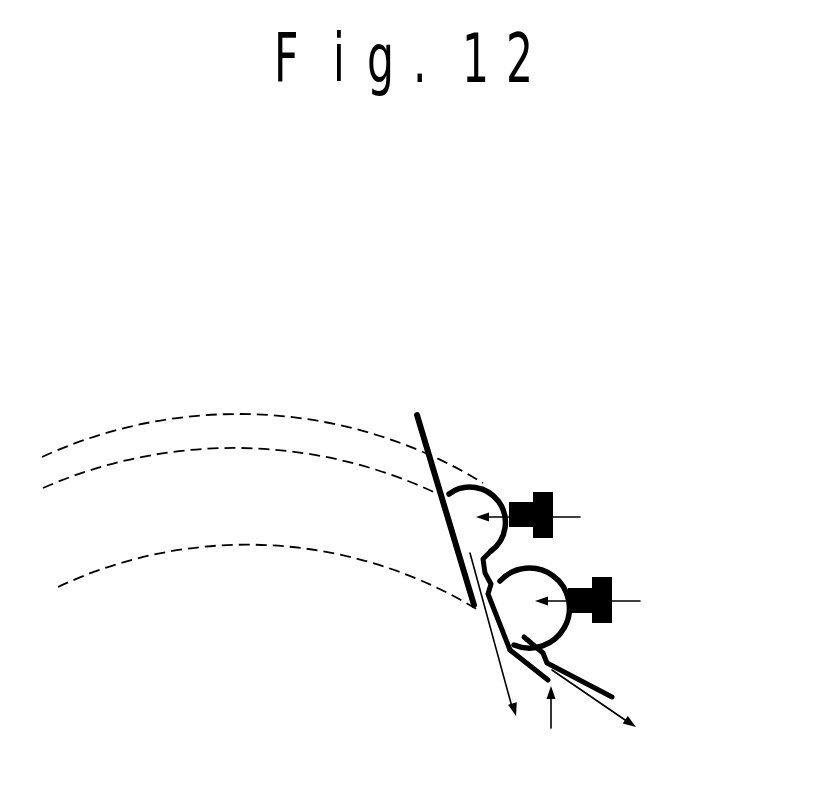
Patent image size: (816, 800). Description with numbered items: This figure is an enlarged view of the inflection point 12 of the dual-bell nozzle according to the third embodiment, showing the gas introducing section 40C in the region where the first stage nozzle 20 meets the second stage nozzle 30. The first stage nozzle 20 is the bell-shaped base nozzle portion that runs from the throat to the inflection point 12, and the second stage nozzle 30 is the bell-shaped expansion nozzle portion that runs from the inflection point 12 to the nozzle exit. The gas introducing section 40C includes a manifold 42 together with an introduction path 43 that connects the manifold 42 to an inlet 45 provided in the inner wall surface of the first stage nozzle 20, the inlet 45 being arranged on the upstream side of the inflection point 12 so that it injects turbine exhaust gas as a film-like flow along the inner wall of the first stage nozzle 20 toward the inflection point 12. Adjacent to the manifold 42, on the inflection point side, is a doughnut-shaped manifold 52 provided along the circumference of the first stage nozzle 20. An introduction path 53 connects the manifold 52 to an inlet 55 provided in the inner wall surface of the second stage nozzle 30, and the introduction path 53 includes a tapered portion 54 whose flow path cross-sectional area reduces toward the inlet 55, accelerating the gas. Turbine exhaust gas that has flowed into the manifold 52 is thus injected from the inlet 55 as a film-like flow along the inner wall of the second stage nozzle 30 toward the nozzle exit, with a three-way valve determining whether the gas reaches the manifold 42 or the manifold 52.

The inflection point 12 is at (512, 653).
The first stage nozzle 20 is at (418, 426).
The second stage nozzle 30 is at (614, 693).
The gas introducing section 40C is at (729, 526).
The manifold 42 is at (485, 498).
The introduction path 43 is at (461, 564).
The inlet 45 is at (474, 617).
The manifold 52 is at (557, 583).
The introduction path 53 is at (531, 652).
The tapered portion 54 is at (542, 655).
The inlet 55 is at (551, 728).